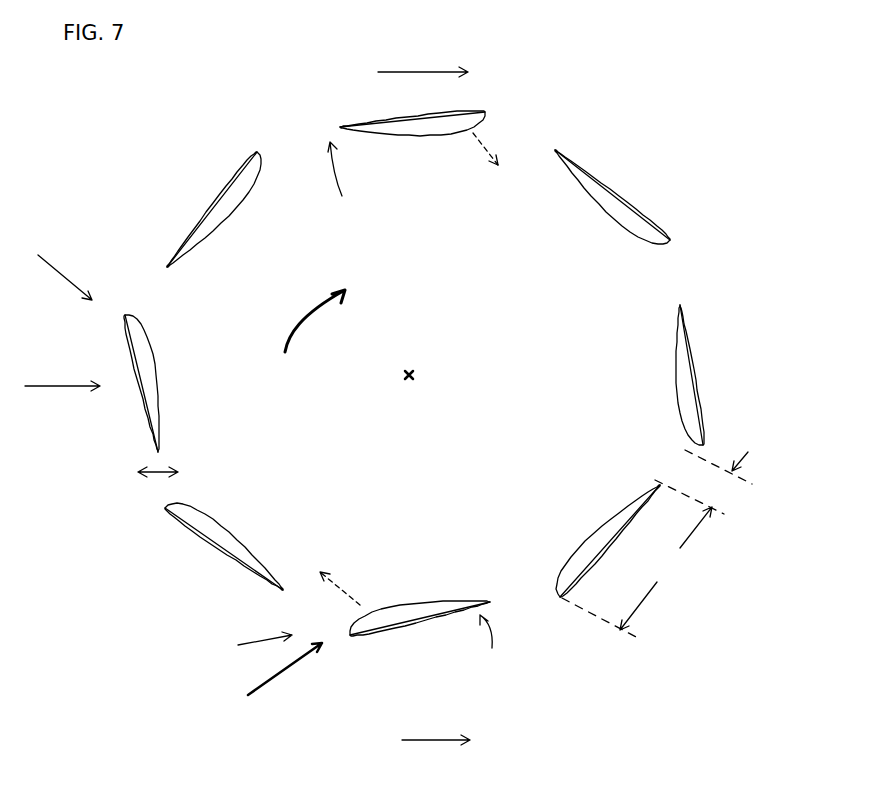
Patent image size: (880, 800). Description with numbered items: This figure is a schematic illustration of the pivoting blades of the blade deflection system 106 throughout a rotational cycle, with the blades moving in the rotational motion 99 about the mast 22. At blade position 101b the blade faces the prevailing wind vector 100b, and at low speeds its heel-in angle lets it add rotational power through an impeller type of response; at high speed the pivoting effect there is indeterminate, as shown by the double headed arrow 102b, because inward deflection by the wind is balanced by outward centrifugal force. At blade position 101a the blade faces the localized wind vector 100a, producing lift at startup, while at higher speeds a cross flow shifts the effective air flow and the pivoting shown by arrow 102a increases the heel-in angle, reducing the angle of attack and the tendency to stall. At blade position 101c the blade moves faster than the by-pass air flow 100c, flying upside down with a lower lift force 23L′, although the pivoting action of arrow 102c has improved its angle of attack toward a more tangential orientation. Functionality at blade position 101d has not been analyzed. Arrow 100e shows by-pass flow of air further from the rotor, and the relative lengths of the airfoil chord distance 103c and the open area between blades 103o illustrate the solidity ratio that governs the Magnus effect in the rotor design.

The blade deflection system 106 is at (712, 60).
The blade position 101a is at (445, 607).
The blade position 101b is at (153, 401).
The blade position 101c is at (445, 125).
The blade position 101d is at (680, 357).
The localized wind vector 100a is at (233, 646).
The prevailing wind vector 100b is at (62, 366).
The by-pass air flow 100c is at (423, 53).
The by-pass flow of air 100e is at (401, 739).
The pivoting action arrow 102a is at (498, 650).
The double headed arrow 102b is at (193, 473).
The pivoting action arrow 102c is at (357, 184).
The lift force 23L′ is at (503, 163).
The rotational motion 99 is at (309, 340).
The mast 22 is at (407, 366).
The open area length between blades 103o is at (709, 482).
The airfoil chord distance 103c is at (637, 572).